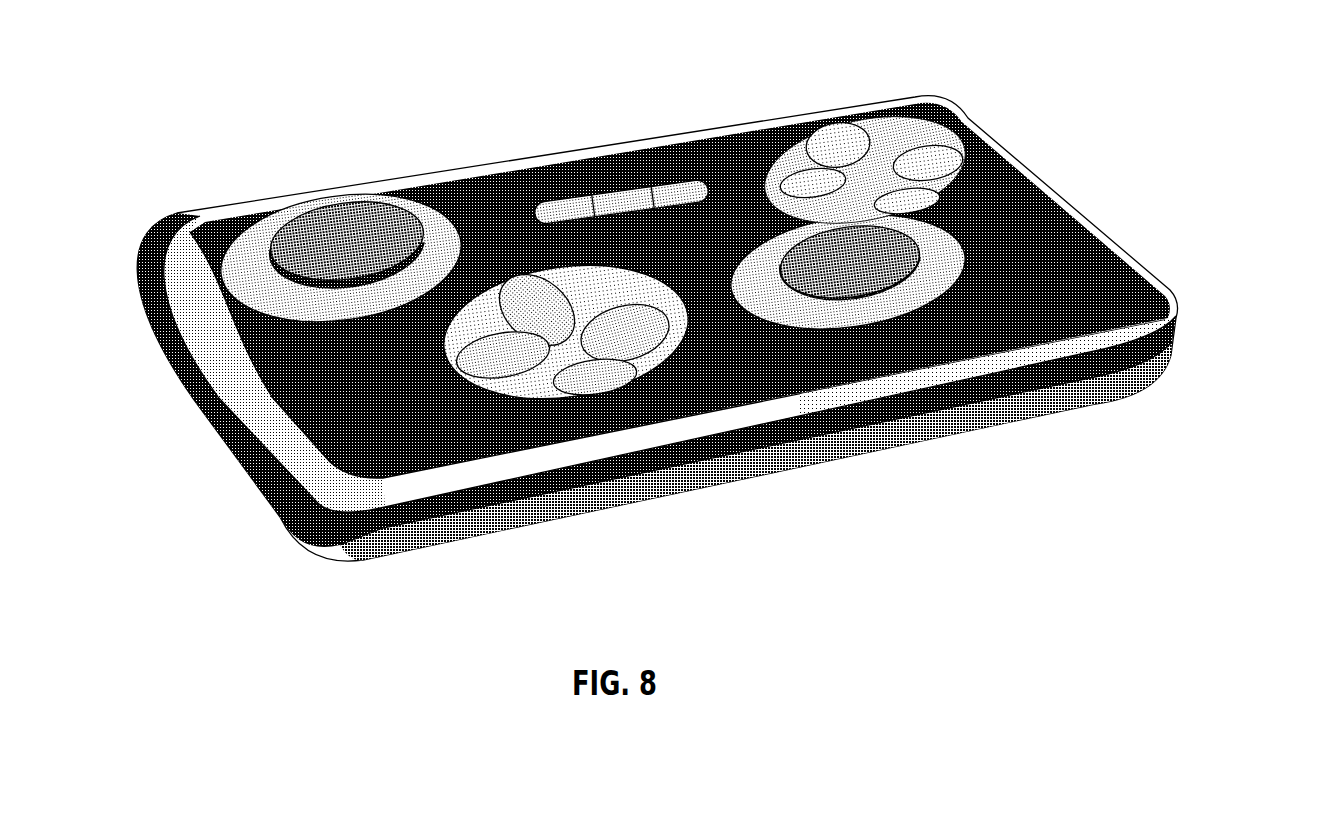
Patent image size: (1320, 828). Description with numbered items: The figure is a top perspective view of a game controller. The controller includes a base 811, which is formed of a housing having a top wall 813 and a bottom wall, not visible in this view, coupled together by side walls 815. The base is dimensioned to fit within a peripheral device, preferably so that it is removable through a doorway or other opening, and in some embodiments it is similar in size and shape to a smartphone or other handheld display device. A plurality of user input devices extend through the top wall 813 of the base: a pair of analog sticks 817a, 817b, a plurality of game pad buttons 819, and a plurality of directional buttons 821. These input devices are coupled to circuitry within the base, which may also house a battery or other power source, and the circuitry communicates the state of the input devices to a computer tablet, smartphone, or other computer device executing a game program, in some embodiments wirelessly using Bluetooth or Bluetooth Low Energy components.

The base 811 is at (927, 107).
The top wall 813 is at (517, 191).
The side walls 815 is at (1167, 357).
The analog stick 817a is at (317, 232).
The analog stick 817b is at (865, 283).
The game pad buttons 819 is at (532, 408).
The directional buttons 821 is at (953, 190).